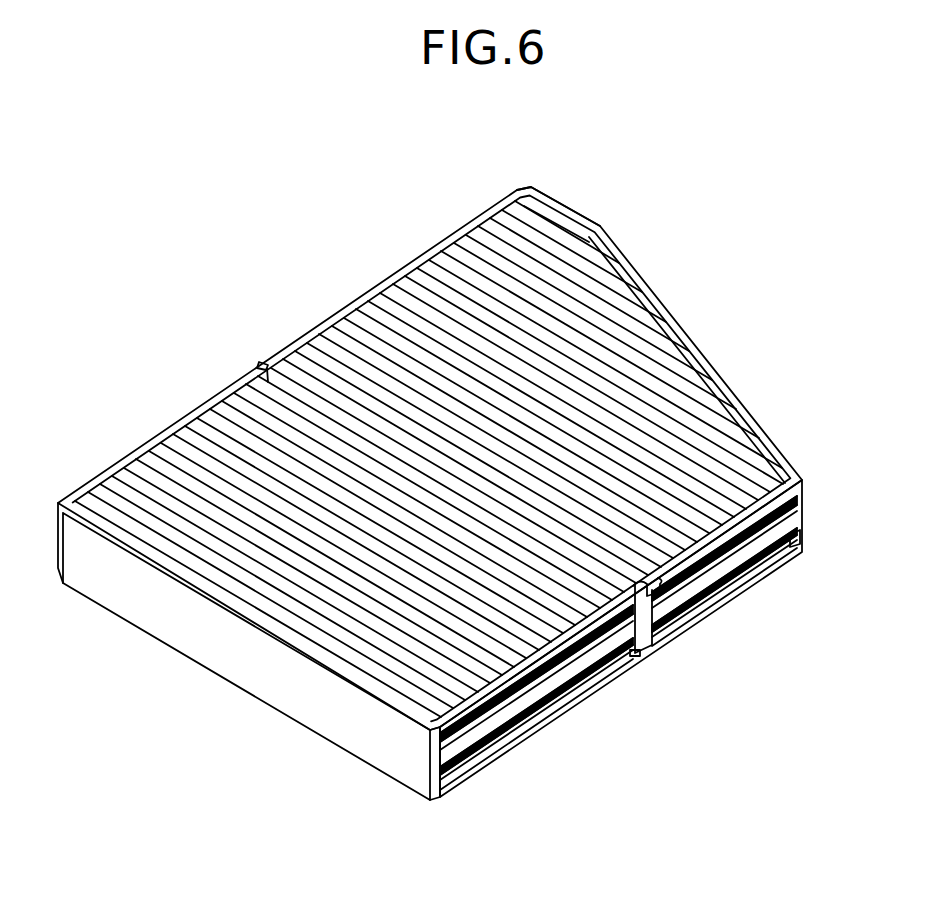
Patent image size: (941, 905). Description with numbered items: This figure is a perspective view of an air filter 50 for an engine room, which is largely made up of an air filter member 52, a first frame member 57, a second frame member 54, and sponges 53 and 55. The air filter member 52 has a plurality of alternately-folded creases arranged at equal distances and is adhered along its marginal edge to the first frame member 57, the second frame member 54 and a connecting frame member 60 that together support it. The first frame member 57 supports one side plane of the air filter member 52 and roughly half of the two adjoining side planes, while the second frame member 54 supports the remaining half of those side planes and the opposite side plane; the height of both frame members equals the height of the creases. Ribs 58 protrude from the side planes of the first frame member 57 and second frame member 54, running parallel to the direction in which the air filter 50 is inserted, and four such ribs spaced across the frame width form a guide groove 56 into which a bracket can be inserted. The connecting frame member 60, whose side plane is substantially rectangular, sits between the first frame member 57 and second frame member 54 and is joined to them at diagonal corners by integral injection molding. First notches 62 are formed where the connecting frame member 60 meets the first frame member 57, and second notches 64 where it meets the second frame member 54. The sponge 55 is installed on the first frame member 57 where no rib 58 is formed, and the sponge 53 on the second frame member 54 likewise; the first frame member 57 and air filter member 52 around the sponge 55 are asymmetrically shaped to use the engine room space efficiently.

The air filter 50 is at (358, 258).
The air filter member 52 is at (668, 397).
The sponge 53 is at (265, 692).
The second frame member 54 is at (522, 752).
The sponge 55 is at (602, 238).
The guide groove 56 is at (427, 797).
The first frame member 57 is at (776, 572).
The ribs 58 is at (800, 546).
The connecting frame member 60 is at (657, 640).
The first notches 62 is at (262, 370).
The second notches 64 is at (655, 650).